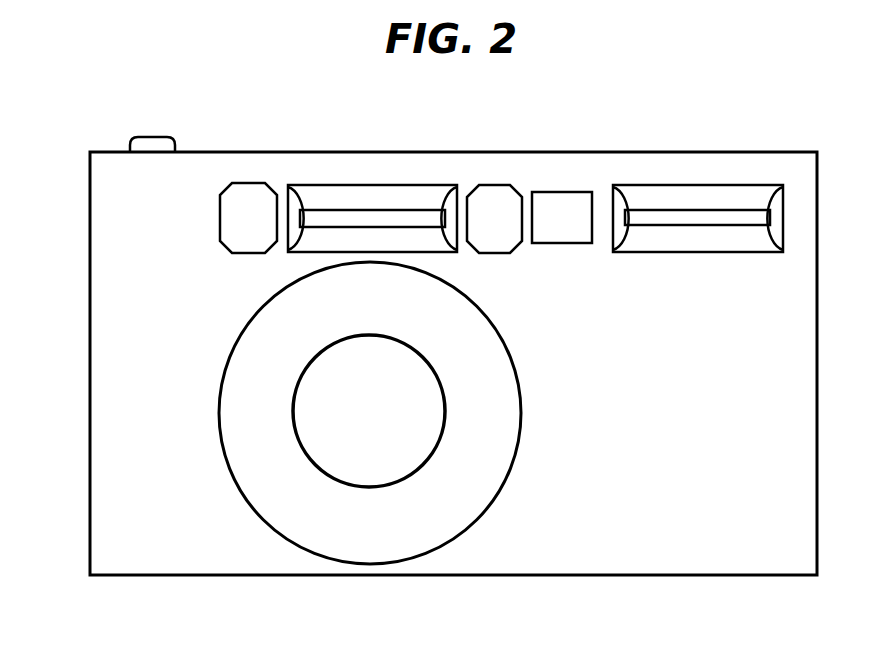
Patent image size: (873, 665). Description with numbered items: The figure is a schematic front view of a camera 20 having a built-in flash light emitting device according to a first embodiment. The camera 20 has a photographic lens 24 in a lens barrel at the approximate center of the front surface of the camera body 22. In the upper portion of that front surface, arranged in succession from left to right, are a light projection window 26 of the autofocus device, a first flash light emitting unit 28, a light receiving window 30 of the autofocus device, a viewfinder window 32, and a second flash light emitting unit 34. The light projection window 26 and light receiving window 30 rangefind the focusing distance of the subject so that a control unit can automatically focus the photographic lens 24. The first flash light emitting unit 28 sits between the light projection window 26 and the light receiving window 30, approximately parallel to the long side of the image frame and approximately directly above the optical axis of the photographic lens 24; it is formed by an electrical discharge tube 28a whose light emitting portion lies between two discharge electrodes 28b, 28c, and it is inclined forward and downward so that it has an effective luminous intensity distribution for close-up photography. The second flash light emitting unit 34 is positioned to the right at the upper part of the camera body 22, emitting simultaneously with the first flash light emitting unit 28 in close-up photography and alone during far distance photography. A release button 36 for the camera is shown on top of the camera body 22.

The camera 20 is at (58, 287).
The camera body 22 is at (112, 368).
The photographic lens 24 is at (382, 458).
The light projection window 26 is at (243, 203).
The first flash light emitting unit 28 is at (383, 176).
The electrical discharge tube 28a is at (402, 215).
The discharge electrode 28b is at (288, 213).
The discharge electrode 28c is at (453, 213).
The light receiving window 30 is at (497, 203).
The viewfinder window 32 is at (563, 207).
The second flash light emitting unit 34 is at (687, 200).
The release button 36 is at (153, 145).